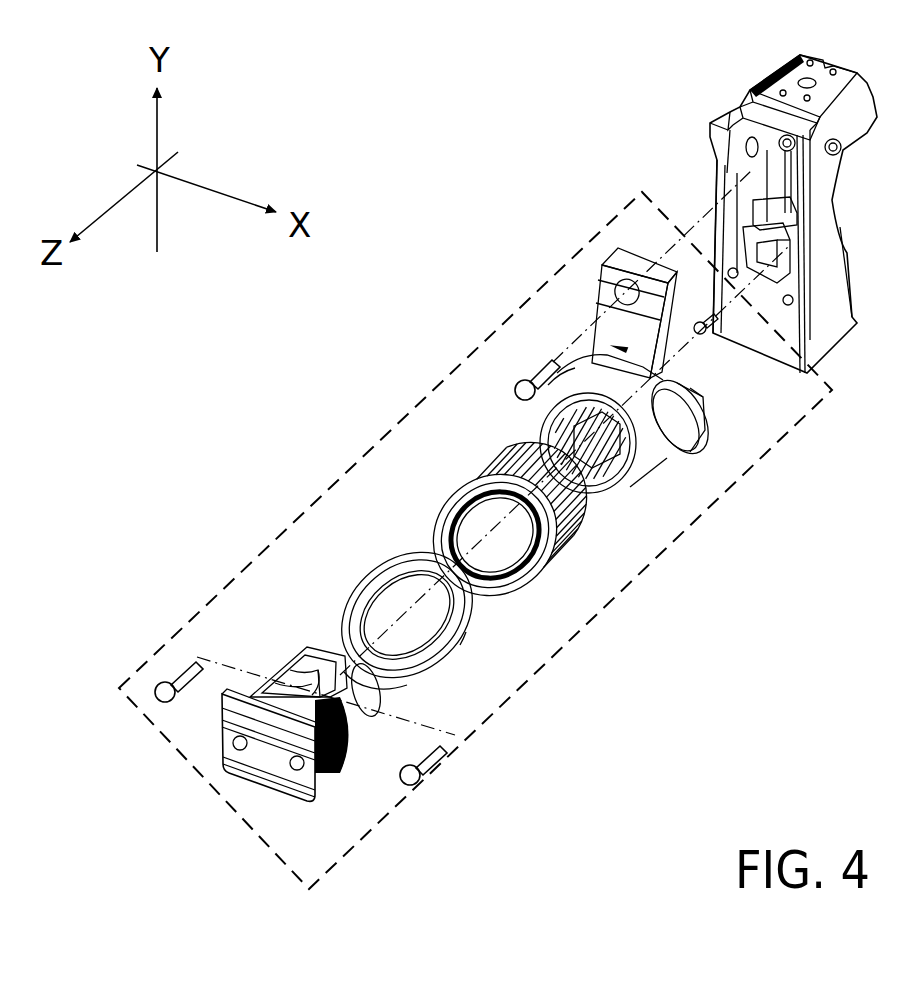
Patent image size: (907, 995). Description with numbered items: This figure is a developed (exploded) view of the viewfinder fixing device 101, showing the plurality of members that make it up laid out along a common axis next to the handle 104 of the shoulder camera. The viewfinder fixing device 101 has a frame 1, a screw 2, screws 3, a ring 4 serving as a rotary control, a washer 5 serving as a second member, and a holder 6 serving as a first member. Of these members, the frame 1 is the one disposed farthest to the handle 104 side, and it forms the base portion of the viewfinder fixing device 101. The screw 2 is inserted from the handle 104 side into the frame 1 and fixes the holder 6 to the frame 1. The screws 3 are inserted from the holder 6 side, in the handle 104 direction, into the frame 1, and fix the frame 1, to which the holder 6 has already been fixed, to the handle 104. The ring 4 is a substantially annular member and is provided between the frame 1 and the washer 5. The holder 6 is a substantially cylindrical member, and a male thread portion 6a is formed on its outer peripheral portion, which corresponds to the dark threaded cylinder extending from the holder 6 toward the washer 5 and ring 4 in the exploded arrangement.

The frame 1 is at (592, 272).
The screw 2 is at (706, 342).
The screws 3 is at (522, 378).
The ring 4 is at (570, 569).
The washer 5 is at (469, 667).
The holder 6 is at (206, 742).
The male thread portion 6a is at (342, 753).
The viewfinder fixing device 101 is at (383, 432).
The handle 104 is at (722, 92).